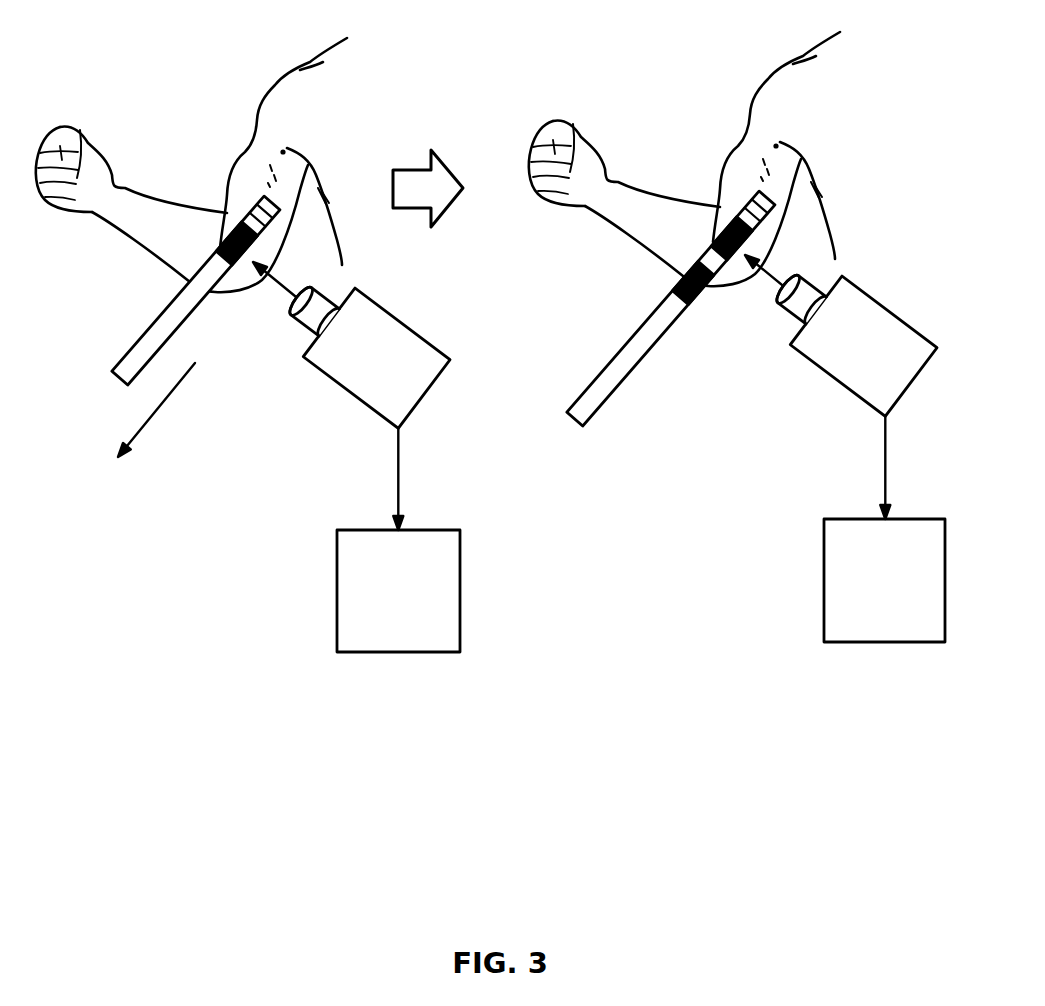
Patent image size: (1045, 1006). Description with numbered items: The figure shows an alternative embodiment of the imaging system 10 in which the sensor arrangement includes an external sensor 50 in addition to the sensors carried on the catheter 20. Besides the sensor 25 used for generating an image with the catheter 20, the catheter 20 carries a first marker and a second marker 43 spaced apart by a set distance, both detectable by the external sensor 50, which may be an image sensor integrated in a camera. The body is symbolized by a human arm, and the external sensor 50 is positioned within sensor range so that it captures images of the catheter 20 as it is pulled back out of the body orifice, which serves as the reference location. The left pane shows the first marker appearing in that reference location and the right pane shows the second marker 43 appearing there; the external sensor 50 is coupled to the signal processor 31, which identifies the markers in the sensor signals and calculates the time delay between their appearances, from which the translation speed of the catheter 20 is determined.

The imaging system 10 is at (490, 465).
The catheter 20 is at (164, 290).
The sensor 25 is at (260, 200).
The signal processor 31 is at (393, 628).
The second marker 43 is at (720, 214).
The external sensor 50 is at (393, 363).